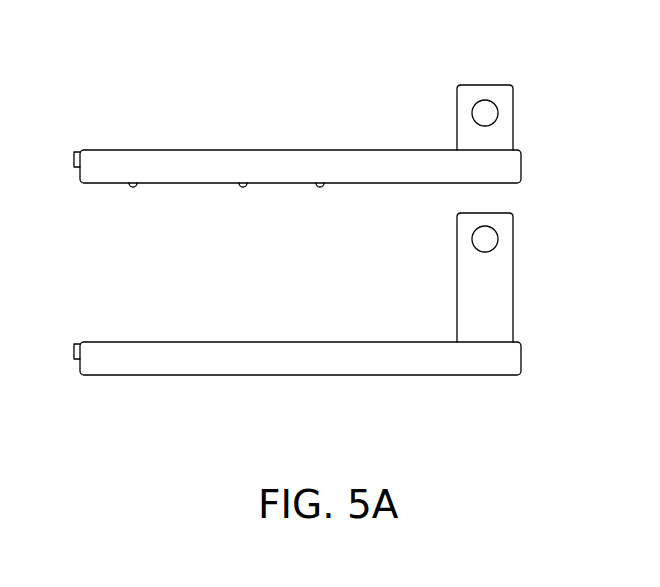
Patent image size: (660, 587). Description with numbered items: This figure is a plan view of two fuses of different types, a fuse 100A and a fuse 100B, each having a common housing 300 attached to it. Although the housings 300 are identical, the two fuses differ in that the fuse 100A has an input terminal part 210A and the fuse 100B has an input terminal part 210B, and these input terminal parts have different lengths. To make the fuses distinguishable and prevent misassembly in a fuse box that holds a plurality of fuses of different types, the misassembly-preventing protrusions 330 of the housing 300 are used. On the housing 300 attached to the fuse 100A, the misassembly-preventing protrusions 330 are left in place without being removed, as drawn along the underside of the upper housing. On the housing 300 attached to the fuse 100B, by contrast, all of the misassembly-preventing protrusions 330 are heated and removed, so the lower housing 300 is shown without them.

The housing 300 is at (183, 148).
The misassembly-preventing protrusions 330 is at (133, 188).
The input terminal part 210A is at (502, 135).
The input terminal part 210B is at (502, 317).
The fuse 100A is at (542, 102).
The fuse 100B is at (540, 295).